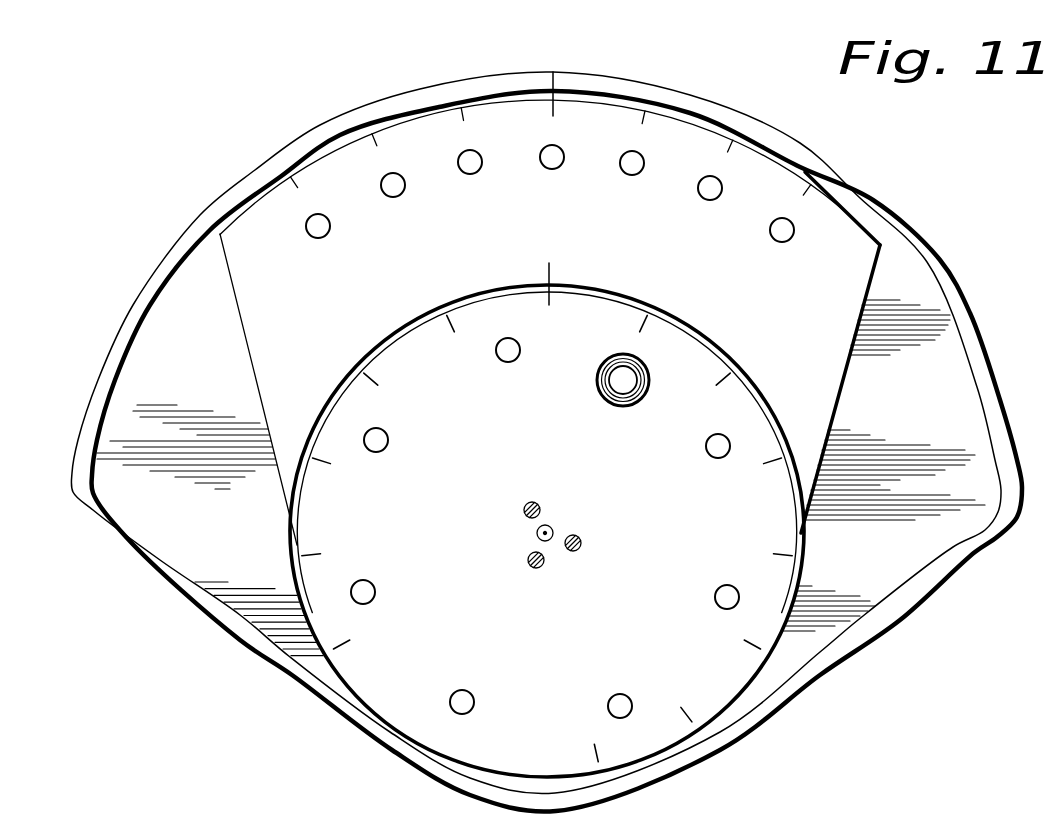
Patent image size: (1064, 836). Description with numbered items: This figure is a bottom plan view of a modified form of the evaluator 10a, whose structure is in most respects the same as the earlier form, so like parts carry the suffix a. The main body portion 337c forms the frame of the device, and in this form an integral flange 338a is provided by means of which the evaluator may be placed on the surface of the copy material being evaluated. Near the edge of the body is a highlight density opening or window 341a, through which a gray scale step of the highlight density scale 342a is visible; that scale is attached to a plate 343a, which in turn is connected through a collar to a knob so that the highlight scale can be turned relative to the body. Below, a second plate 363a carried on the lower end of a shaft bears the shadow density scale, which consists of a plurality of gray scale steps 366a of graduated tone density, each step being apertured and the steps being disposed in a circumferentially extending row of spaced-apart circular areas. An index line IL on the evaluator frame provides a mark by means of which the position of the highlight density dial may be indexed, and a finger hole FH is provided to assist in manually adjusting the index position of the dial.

The main body portion 337c is at (138, 268).
The evaluator 10a is at (787, 58).
The integral flange 338a is at (880, 636).
The highlight density scale 342a is at (882, 262).
The highlight density opening or window 341a is at (385, 192).
The plate 343a is at (735, 372).
The index line IL is at (557, 80).
The plate 363a is at (767, 548).
The gray scale step 366a is at (520, 355).
The finger hole FH is at (641, 398).